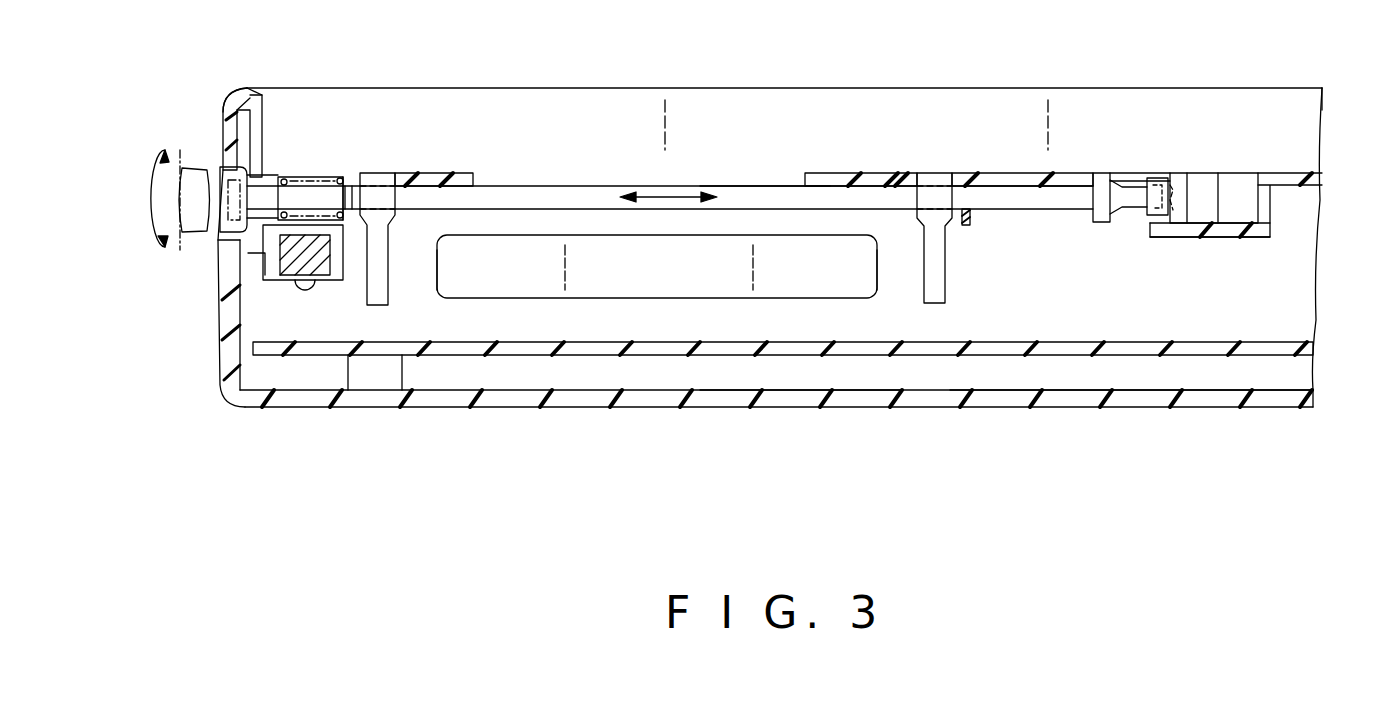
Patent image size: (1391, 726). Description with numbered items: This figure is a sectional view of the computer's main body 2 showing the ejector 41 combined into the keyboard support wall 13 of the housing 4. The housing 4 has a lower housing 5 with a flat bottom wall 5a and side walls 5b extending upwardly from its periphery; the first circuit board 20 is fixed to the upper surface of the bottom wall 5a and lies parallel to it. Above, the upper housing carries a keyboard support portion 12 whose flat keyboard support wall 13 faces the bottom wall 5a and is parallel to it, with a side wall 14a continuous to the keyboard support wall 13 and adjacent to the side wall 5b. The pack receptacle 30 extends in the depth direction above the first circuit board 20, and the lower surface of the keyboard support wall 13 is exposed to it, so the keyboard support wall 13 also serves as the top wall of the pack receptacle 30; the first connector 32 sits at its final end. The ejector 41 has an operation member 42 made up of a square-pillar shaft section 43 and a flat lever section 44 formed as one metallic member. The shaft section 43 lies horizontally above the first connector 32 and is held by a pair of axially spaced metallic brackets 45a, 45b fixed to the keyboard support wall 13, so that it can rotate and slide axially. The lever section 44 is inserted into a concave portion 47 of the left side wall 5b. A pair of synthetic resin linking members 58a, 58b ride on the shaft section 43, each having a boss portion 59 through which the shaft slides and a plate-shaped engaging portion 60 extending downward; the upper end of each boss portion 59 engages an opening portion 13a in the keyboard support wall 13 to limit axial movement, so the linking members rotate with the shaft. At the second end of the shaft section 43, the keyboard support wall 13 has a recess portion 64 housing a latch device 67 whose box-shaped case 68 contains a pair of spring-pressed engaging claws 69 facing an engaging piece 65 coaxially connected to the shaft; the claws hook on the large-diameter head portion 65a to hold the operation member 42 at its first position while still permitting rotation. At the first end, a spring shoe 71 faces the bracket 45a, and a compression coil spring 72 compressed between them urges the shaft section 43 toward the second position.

The main body 2 is at (698, 86).
The housing 4 is at (237, 92).
The lower housing 5 is at (258, 407).
The bottom wall 5a is at (836, 396).
The side wall 5b is at (222, 335).
The keyboard support portion 12 is at (1320, 130).
The keyboard support wall 13 is at (826, 176).
The opening portion 13a is at (400, 176).
The side wall 14a is at (264, 140).
The first circuit board 20 is at (1092, 352).
The pack receptacle 30 is at (603, 333).
The first connector 32 is at (680, 280).
The ejector 41 is at (764, 184).
The operation member 42 is at (531, 186).
The shaft section 43 is at (592, 195).
The lever section 44 is at (228, 196).
The bracket 45a is at (350, 262).
The bracket 45b is at (968, 226).
The concave portion 47 is at (222, 243).
The linking member 58a is at (390, 266).
The linking member 58b is at (925, 262).
The boss portion 59 is at (437, 247).
The engaging portion 60 is at (380, 300).
The recess portion 64 is at (1130, 178).
The engaging piece 65 is at (1112, 206).
The head portion 65a is at (1174, 182).
The latch device 67 is at (1238, 218).
The case 68 is at (1240, 182).
The engaging claws 69 is at (1148, 206).
The spring shoe 71 is at (270, 185).
The compression coil spring 72 is at (340, 177).